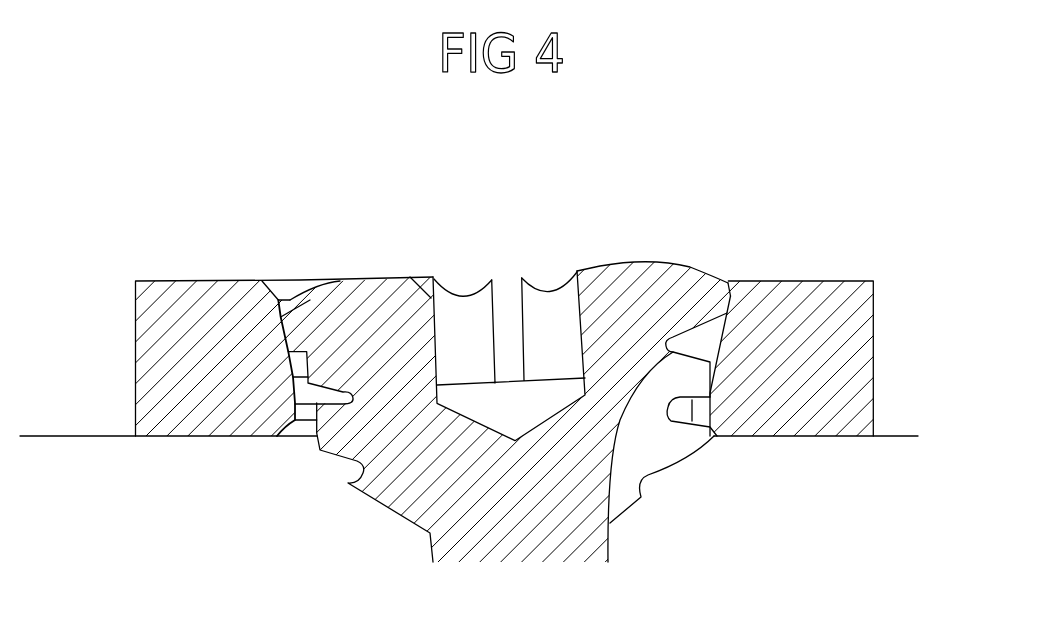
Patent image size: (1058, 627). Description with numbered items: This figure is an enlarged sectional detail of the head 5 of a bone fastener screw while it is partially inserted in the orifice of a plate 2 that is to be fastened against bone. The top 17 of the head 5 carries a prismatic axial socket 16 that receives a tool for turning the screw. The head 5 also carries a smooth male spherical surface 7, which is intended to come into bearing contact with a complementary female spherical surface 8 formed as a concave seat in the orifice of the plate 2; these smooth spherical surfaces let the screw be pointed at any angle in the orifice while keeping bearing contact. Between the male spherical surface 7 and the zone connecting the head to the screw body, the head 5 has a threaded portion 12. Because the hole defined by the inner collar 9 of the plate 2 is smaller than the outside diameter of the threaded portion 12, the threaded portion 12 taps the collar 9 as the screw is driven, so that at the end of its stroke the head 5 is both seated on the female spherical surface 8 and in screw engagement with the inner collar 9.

The plate 2 is at (822, 358).
The head 5 is at (657, 275).
The male spherical surface 7 is at (287, 338).
The female spherical surface 8 is at (295, 363).
The inner collar 9 is at (703, 410).
The threaded portion 12 is at (330, 457).
The prismatic axial socket 16 is at (540, 312).
The top 17 is at (612, 265).